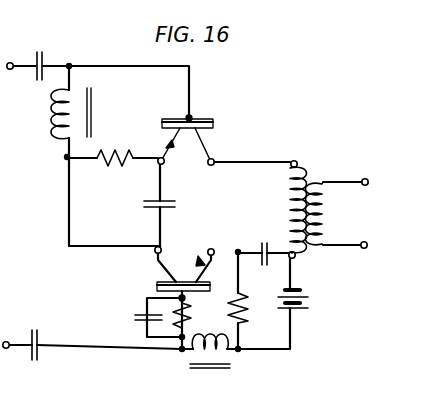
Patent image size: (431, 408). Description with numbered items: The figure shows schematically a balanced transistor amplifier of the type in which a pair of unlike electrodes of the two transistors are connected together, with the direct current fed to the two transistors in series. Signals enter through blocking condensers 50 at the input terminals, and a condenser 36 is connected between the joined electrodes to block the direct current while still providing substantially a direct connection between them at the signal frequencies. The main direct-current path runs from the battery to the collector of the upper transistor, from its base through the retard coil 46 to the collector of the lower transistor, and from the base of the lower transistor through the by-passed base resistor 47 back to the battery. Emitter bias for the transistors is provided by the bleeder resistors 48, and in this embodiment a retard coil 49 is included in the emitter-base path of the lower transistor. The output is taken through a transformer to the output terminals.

The blocking condenser 50 is at (42, 48).
The retard coil 46 is at (57, 106).
The bleeder resistor 48 is at (118, 150).
The condenser 36 is at (178, 204).
The base resistor 47 is at (188, 315).
The retard coil 49 is at (200, 366).